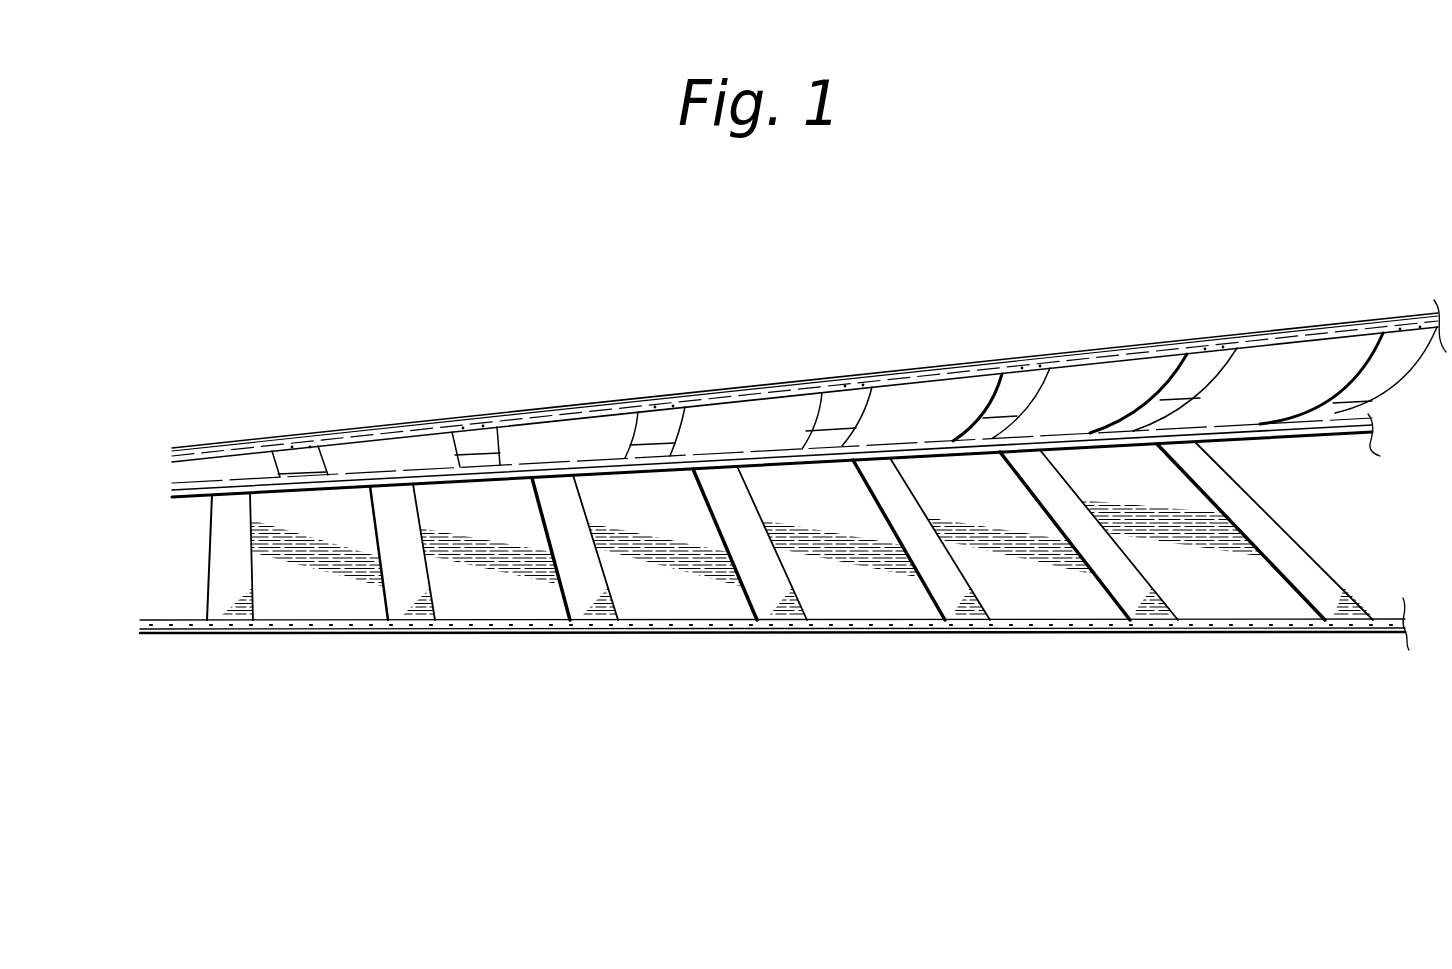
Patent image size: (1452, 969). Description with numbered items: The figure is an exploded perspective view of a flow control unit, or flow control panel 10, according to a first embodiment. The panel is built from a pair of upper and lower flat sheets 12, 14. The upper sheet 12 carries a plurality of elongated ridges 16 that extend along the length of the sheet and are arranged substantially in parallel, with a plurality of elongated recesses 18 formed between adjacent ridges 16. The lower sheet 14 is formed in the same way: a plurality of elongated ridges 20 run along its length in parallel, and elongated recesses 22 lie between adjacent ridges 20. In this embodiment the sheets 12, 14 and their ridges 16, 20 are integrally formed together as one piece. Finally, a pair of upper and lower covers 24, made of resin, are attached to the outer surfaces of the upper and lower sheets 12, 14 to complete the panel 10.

The flow control panel 10 is at (707, 374).
The upper sheet 12 is at (898, 372).
The lower sheet 14 is at (469, 639).
The elongated ridges 16 is at (1015, 392).
The elongated recesses 18 is at (567, 443).
The elongated ridges 20 is at (1148, 592).
The elongated recesses 22 is at (687, 597).
The upper and lower covers 24 is at (1253, 333).